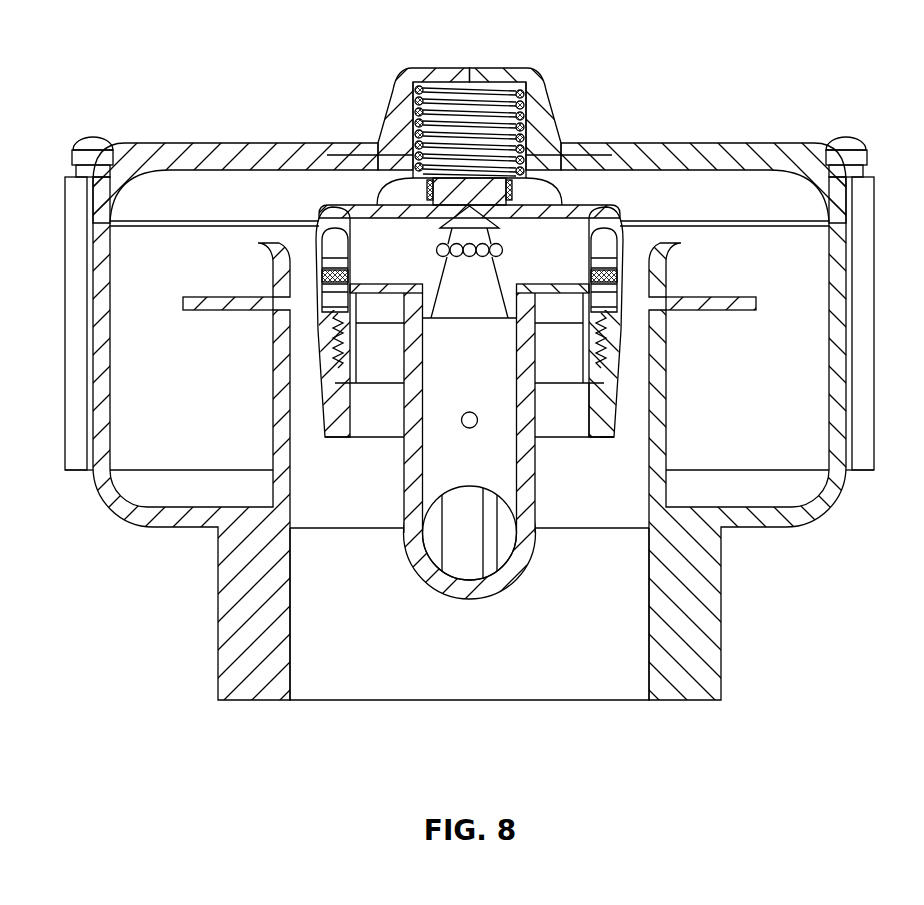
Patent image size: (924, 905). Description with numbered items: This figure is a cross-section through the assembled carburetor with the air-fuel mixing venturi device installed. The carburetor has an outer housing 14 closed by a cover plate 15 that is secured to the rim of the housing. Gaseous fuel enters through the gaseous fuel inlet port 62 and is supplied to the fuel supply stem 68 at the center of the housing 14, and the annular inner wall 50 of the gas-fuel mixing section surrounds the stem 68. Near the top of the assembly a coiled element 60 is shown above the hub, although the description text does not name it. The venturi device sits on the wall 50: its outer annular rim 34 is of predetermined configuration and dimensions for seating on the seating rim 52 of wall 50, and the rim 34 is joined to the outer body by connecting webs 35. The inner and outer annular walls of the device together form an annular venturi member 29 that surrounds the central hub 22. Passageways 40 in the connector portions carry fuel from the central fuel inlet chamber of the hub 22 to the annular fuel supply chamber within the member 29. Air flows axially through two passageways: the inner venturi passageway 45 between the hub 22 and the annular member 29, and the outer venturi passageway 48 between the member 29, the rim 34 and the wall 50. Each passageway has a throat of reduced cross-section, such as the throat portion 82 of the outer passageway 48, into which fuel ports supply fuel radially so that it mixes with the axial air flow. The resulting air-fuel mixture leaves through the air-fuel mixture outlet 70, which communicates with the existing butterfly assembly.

The outer housing 14 is at (843, 353).
The cover plate 15 is at (648, 158).
The central hub 22 is at (430, 308).
The annular venturi member 29 is at (612, 323).
The outer annular rim 34 is at (278, 278).
The connecting webs 35 is at (636, 273).
The passageways 40 is at (377, 240).
The inner venturi passageway 45 is at (625, 403).
The outer venturi passageway 48 is at (296, 353).
The annular inner wall 50 is at (650, 368).
The seating rim 52 is at (662, 297).
The spring 60 is at (483, 118).
The gaseous fuel inlet port 62 is at (463, 567).
The fuel supply stem 68 is at (418, 457).
The air-fuel mixture outlet 70 is at (393, 682).
The throat portion 82 is at (307, 313).